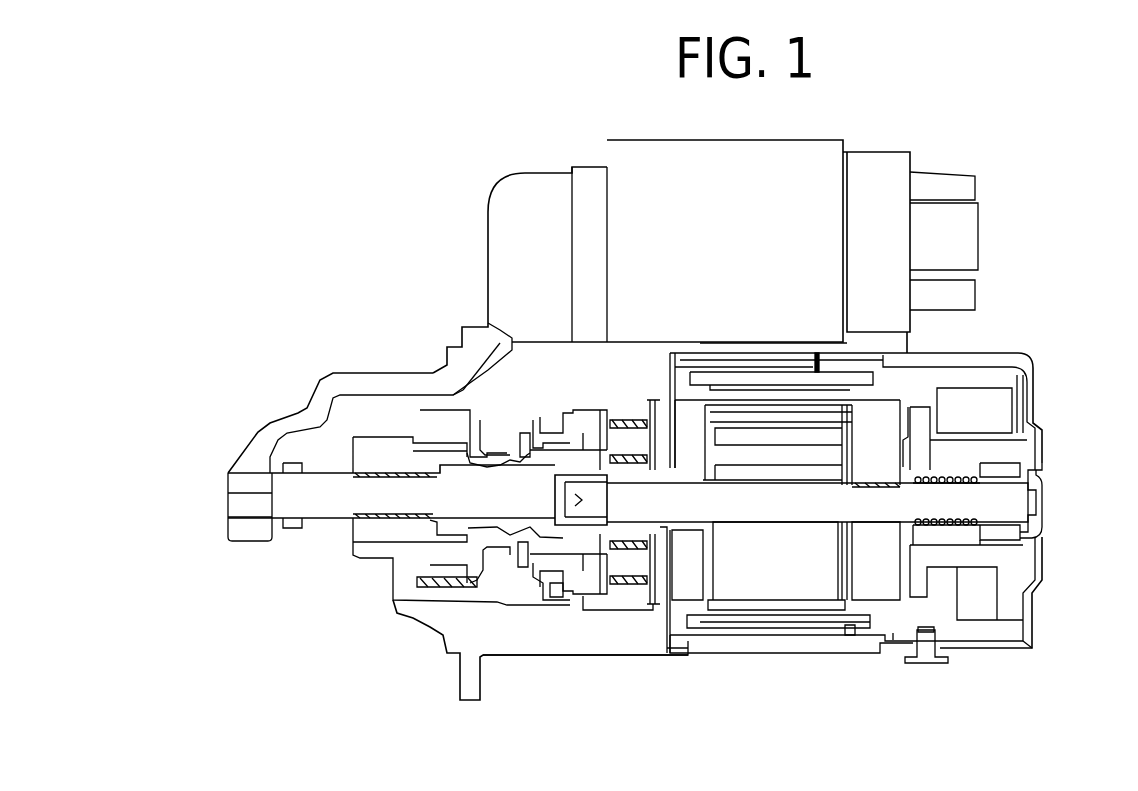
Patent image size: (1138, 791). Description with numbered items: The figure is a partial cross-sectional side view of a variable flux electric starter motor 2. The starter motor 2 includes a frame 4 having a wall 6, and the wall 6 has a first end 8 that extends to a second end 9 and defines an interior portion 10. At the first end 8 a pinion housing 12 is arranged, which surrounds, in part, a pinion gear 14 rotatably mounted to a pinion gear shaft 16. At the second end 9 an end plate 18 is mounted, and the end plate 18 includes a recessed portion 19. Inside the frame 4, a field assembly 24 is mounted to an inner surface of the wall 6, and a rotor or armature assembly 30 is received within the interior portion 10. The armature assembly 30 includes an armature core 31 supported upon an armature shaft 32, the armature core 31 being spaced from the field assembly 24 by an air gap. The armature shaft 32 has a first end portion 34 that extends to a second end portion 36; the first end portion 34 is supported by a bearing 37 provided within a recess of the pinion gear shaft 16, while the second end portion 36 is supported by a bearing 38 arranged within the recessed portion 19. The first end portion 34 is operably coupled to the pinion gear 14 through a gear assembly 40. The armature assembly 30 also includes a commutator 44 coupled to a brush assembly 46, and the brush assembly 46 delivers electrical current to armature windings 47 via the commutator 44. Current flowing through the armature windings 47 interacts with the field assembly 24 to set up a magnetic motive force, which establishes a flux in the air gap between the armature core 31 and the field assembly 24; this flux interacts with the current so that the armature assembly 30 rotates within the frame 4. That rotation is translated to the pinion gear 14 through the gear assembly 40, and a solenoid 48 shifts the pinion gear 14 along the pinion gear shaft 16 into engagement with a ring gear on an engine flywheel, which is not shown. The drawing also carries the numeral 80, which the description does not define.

The variable flux electric starter motor 2 is at (303, 230).
The frame 4 is at (980, 353).
The wall 6 is at (787, 647).
The first end 8 is at (470, 365).
The second end 9 is at (1040, 375).
The interior portion 10 is at (997, 375).
The pinion housing 12 is at (327, 400).
The pinion gear 14 is at (397, 532).
The pinion gear shaft 16 is at (315, 510).
The end plate 18 is at (1042, 503).
The recessed portion 19 is at (1043, 468).
The field assembly 24 is at (820, 343).
The armature assembly 30 is at (806, 591).
The armature core 31 is at (727, 585).
The armature shaft 32 is at (740, 507).
The first end portion 34 is at (633, 590).
The second end portion 36 is at (1007, 512).
The bearing 37 is at (575, 475).
The bearing 38 is at (1030, 567).
The gear assembly 40 is at (580, 605).
The commutator 44 is at (940, 553).
The brush assembly 46 is at (1027, 647).
The armature windings 47 is at (683, 563).
The solenoid 48 is at (425, 200).
The fastener 80 is at (845, 352).